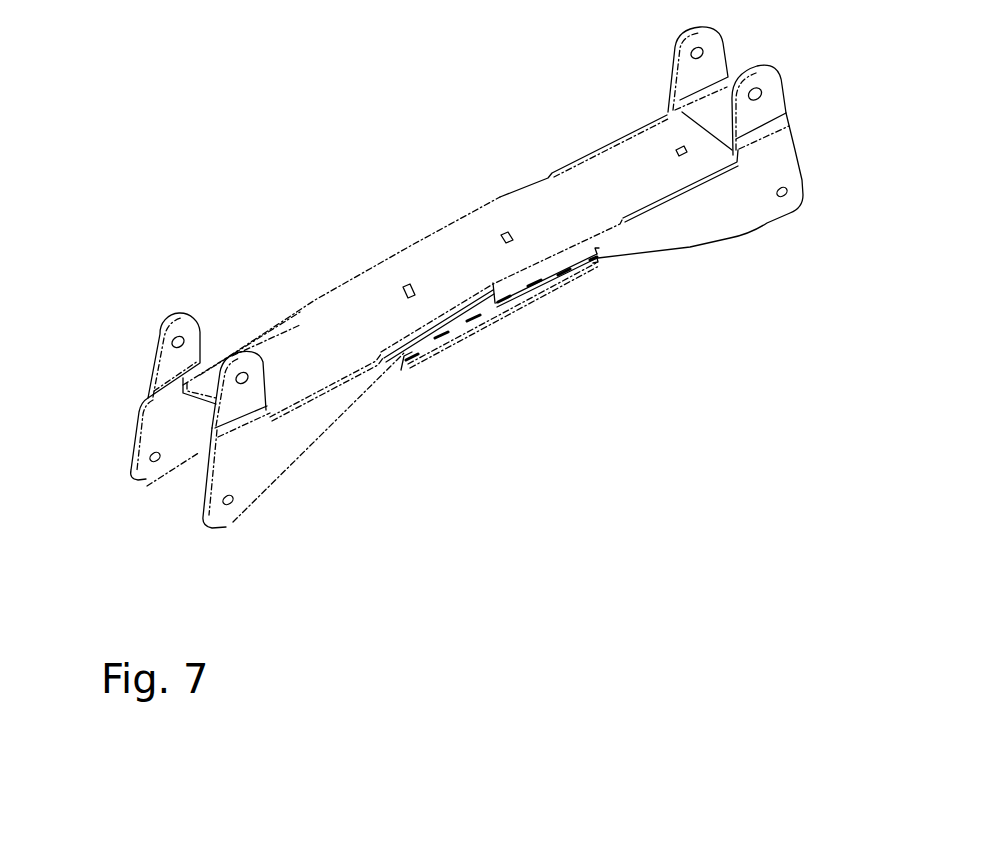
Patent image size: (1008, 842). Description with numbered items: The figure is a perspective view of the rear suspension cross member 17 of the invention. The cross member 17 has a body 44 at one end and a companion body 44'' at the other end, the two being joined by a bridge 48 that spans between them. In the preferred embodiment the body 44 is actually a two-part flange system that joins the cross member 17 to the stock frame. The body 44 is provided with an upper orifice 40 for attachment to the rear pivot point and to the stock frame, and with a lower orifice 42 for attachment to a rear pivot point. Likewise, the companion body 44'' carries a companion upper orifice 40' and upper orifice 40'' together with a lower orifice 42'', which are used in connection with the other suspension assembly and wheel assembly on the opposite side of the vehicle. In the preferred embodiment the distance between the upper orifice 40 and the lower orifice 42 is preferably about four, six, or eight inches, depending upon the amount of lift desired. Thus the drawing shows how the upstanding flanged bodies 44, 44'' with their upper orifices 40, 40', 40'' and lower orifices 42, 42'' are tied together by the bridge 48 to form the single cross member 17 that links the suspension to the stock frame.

The rear suspension cross member 17 is at (570, 424).
The upper orifice 40 is at (190, 355).
The companion upper orifice 40' is at (672, 57).
The mounting tab 40'' is at (805, 110).
The lower orifice 42 is at (196, 511).
The hole 42'' is at (826, 204).
The body 44 is at (202, 454).
The plate 44'' is at (719, 200).
The bridge 48 is at (430, 263).